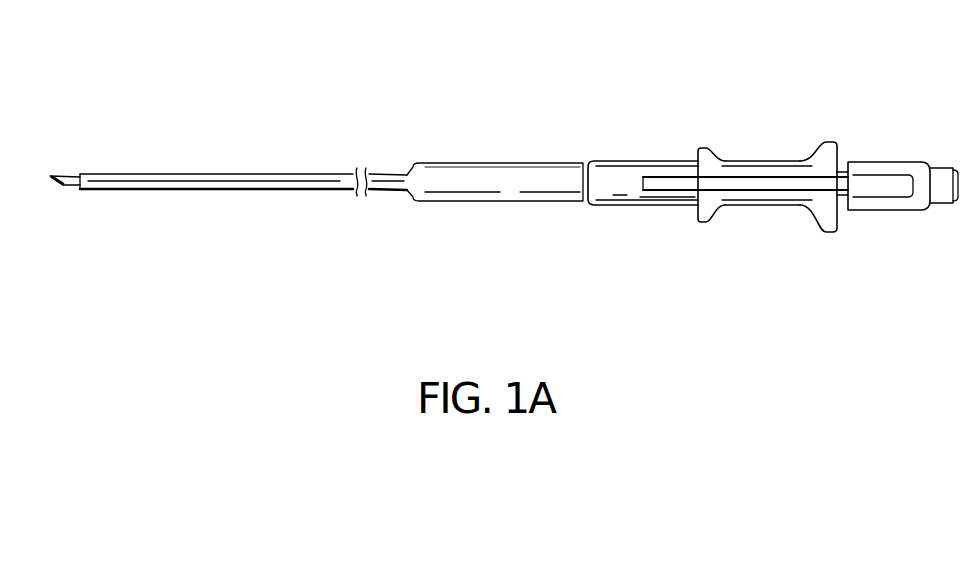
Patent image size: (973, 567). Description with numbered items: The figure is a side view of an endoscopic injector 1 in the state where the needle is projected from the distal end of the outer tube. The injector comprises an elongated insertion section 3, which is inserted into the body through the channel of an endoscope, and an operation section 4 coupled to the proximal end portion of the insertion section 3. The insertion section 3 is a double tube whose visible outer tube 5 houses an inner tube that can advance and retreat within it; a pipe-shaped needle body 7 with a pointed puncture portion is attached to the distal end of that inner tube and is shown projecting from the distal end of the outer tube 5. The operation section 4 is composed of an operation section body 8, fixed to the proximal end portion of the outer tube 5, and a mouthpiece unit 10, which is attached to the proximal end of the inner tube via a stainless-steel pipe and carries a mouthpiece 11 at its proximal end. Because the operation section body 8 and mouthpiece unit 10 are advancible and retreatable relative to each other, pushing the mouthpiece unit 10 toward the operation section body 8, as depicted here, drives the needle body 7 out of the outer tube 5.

The endoscopic injector 1 is at (548, 95).
The insertion section 3 is at (275, 228).
The operation section 4 is at (675, 258).
The outer tube 5 is at (172, 173).
The needle body 7 is at (70, 187).
The operation section body 8 is at (612, 185).
The mouthpiece unit 10 is at (890, 140).
The mouthpiece 11 is at (952, 205).